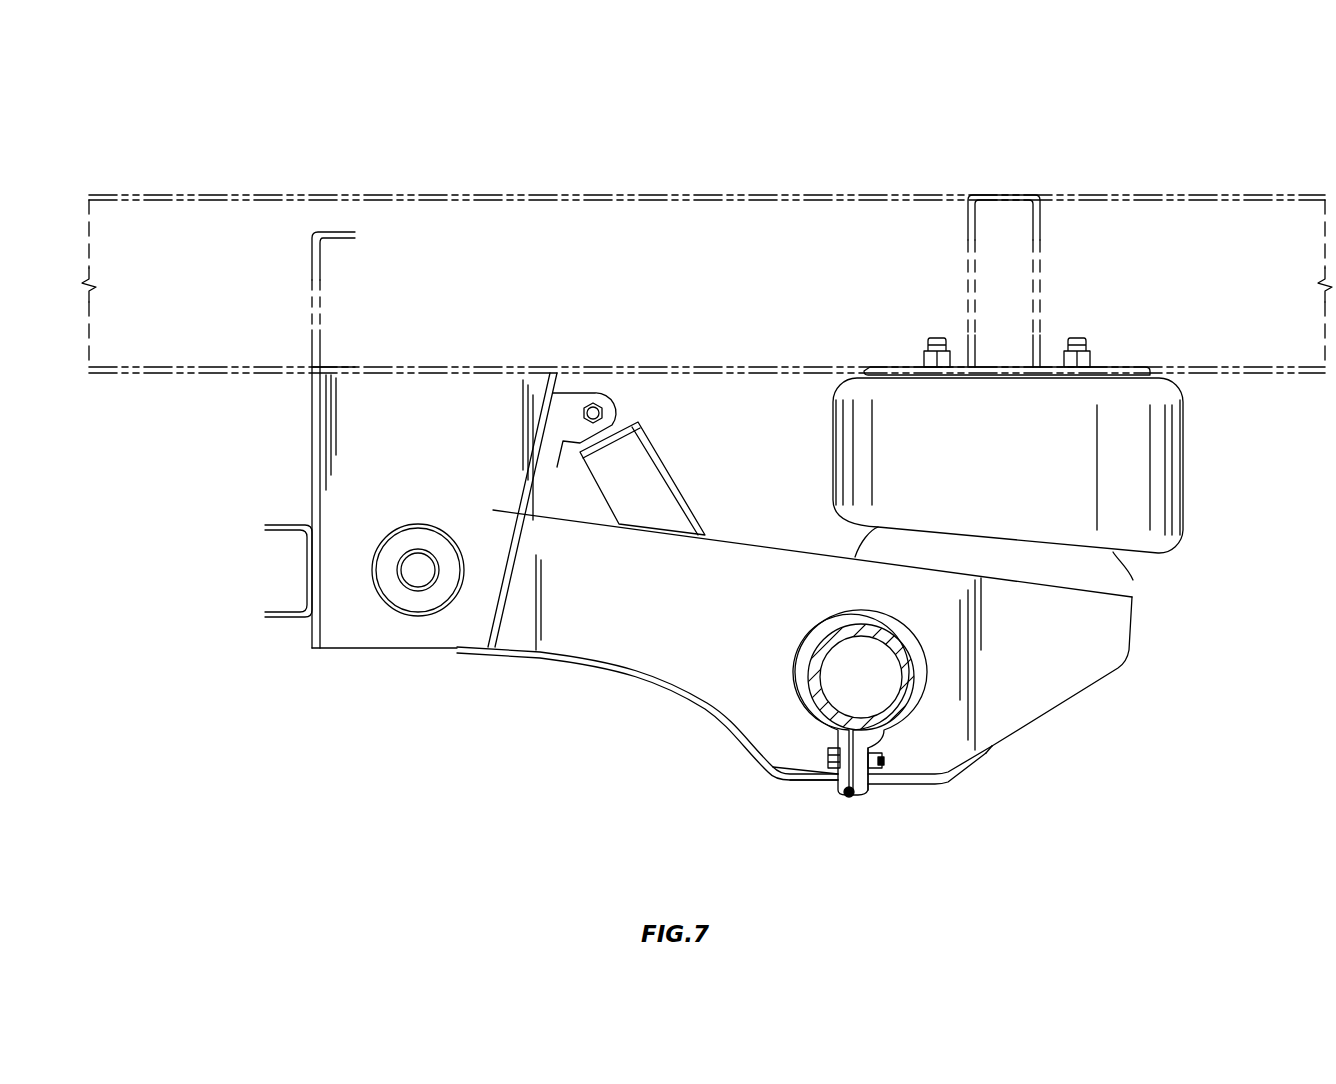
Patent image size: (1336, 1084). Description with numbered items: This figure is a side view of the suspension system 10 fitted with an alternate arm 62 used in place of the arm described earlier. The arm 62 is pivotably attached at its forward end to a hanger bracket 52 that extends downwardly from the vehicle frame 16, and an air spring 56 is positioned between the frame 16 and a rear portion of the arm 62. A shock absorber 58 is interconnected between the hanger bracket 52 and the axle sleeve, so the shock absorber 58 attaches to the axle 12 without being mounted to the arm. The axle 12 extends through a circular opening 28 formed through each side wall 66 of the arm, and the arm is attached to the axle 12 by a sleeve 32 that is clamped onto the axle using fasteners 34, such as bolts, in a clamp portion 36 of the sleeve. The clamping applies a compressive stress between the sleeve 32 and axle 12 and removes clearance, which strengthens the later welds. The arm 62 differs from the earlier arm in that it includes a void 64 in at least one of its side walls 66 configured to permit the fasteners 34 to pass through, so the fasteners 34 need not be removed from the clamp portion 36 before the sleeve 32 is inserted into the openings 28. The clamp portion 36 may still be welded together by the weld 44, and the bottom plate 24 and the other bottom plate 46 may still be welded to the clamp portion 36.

The suspension system 10 is at (1127, 150).
The axle 12 is at (800, 713).
The vehicle frame 16 is at (557, 193).
The bottom plate 24 is at (572, 670).
The circular opening 28 is at (838, 618).
The sleeve 32 is at (935, 668).
The fasteners 34 is at (835, 777).
The clamp portion 36 is at (856, 797).
The weld 44 is at (848, 797).
The bottom plate 46 is at (983, 753).
The hanger bracket 52 is at (312, 437).
The air spring 56 is at (1183, 457).
The shock absorber 58 is at (690, 505).
The alternate arm 62 is at (1125, 660).
The void 64 is at (887, 787).
The side walls 66 is at (688, 635).